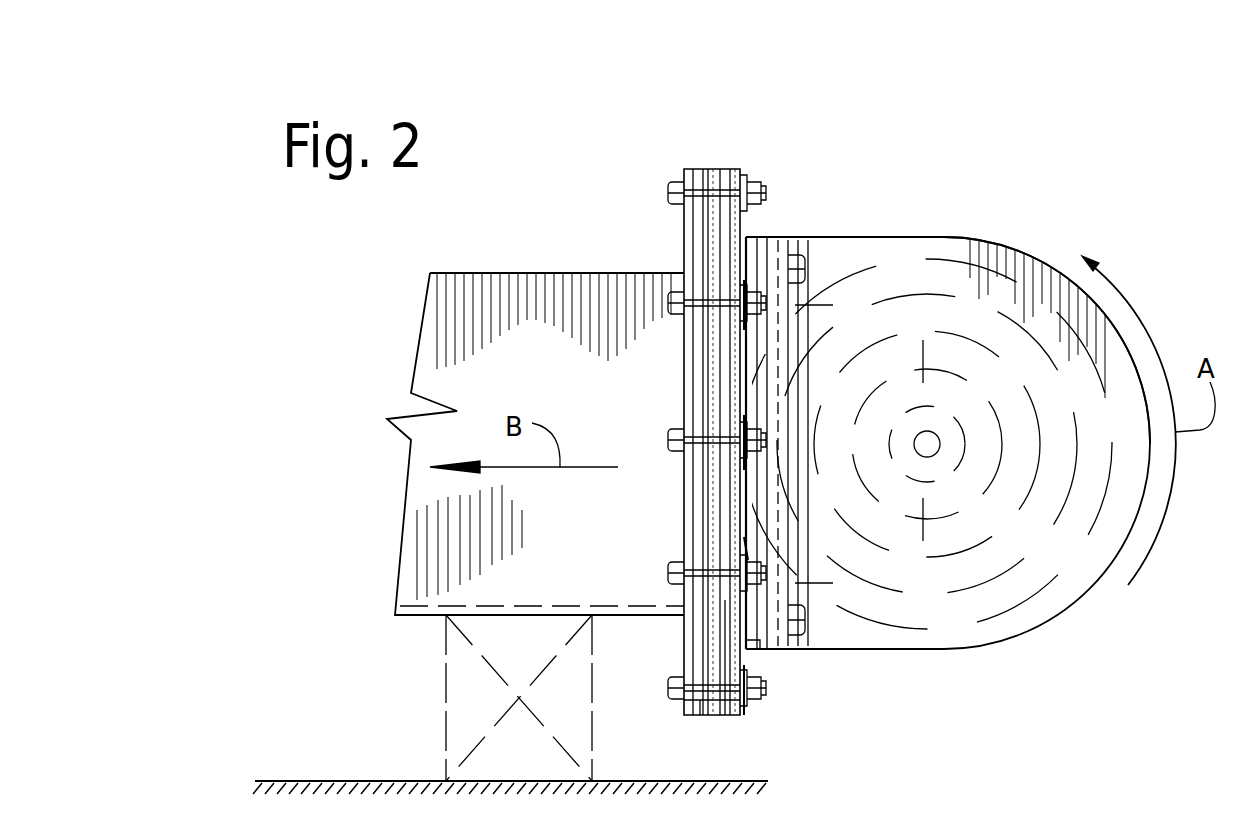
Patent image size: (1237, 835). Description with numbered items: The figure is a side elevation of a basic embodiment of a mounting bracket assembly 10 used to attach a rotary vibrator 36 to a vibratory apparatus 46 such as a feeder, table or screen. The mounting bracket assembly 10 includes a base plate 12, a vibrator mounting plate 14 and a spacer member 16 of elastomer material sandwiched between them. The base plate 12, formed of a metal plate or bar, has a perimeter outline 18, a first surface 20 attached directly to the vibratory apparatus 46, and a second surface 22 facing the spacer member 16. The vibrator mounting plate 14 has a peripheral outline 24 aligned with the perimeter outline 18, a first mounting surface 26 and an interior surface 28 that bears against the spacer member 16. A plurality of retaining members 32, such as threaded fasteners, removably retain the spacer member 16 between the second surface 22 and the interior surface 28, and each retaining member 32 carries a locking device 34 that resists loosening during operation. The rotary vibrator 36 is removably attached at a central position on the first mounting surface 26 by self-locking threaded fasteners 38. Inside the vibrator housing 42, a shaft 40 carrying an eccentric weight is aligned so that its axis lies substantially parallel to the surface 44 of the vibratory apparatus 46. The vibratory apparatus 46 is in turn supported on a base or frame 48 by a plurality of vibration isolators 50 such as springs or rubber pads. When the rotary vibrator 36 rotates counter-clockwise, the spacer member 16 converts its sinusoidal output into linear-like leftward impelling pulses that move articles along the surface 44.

The mounting bracket assembly 10 is at (753, 123).
The base plate 12 is at (685, 167).
The vibrator mounting plate 14 is at (742, 167).
The spacer member 16 is at (710, 168).
The perimeter outline 18 is at (682, 727).
The first surface 20 is at (672, 248).
The second surface 22 is at (705, 702).
The peripheral outline 24 is at (707, 603).
The first mounting surface 26 is at (762, 645).
The interior surface 28 is at (743, 694).
The retaining members 32 is at (648, 176).
The locking device 34 is at (795, 181).
The rotary vibrator 36 is at (1115, 628).
The threaded fasteners 38 is at (807, 268).
The shaft 40 is at (927, 457).
The vibrator housing 42 is at (990, 240).
The surface 44 is at (485, 605).
The vibratory apparatus 46 is at (422, 328).
The base or frame 48 is at (360, 780).
The vibration isolators 50 is at (446, 708).